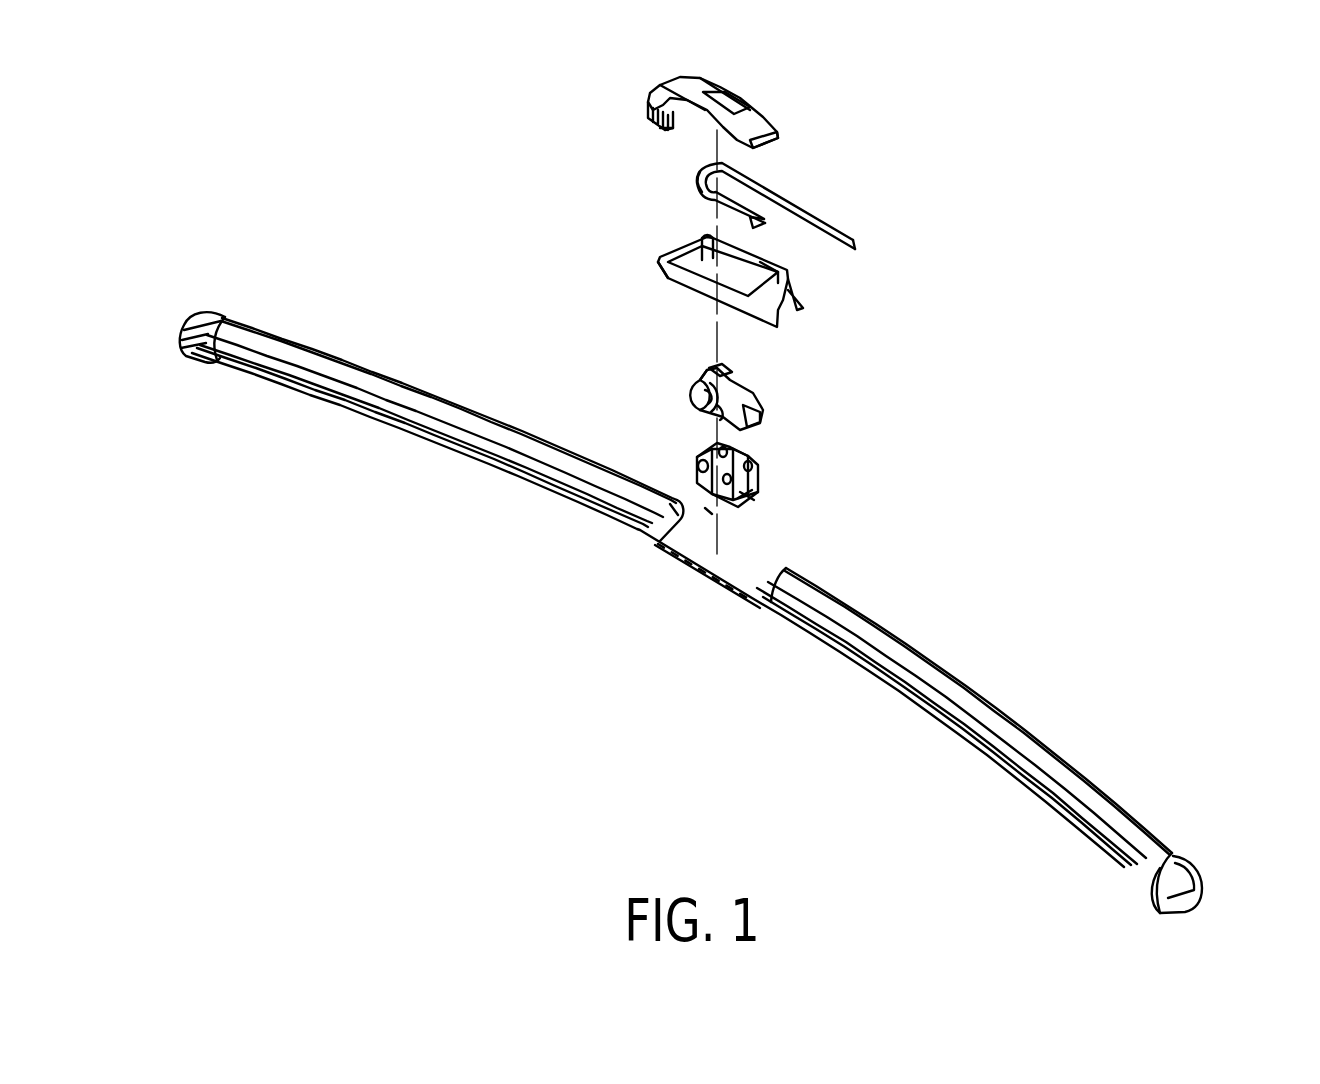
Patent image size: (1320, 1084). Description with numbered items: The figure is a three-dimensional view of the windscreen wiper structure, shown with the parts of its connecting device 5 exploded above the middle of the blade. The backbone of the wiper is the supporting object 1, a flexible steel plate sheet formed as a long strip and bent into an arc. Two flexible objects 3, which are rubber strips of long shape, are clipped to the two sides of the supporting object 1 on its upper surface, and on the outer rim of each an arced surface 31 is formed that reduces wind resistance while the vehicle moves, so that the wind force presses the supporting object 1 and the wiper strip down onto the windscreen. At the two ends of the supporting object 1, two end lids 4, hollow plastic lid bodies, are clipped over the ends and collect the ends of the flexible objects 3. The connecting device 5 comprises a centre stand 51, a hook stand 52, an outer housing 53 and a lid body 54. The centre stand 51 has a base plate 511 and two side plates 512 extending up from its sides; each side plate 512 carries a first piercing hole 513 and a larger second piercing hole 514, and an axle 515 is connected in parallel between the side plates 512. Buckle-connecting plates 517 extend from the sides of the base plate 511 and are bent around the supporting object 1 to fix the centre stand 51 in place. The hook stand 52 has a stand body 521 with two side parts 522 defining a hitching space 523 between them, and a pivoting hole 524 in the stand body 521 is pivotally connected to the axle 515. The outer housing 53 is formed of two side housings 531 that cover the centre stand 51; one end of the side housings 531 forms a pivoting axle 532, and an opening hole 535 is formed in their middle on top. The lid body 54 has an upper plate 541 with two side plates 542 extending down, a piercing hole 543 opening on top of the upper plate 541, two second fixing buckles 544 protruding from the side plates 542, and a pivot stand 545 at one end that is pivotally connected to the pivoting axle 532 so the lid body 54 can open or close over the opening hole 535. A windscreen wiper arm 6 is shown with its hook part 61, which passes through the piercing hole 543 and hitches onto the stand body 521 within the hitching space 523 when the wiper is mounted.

The supporting object 1 is at (752, 560).
The flexible objects 3 is at (344, 356).
The arced surface 31 is at (440, 410).
The end lids 4 is at (228, 306).
The connecting device 5 is at (956, 330).
The centre stand 51 is at (708, 483).
The base plate 511 is at (760, 480).
The side plates 512 is at (677, 505).
The first piercing hole 513 is at (706, 510).
The second piercing hole 514 is at (697, 462).
The axle 515 is at (747, 457).
The buckle-connecting plates 517 is at (760, 500).
The hook stand 52 is at (753, 388).
The stand body 521 is at (777, 402).
The side parts 522 is at (707, 402).
The hitching space 523 is at (713, 370).
The pivoting hole 524 is at (720, 417).
The outer housing 53 is at (802, 292).
The side housings 531 is at (703, 270).
The pivoting axle 532 is at (793, 275).
The opening hole 535 is at (700, 238).
The lid body 54 is at (743, 100).
The upper plate 541 is at (683, 85).
The side plates 542 is at (657, 113).
The piercing hole 543 is at (763, 120).
The second fixing buckles 544 is at (667, 130).
The pivot stand 545 is at (747, 140).
The windscreen wiper arm 6 is at (816, 202).
The hook part 61 is at (700, 190).